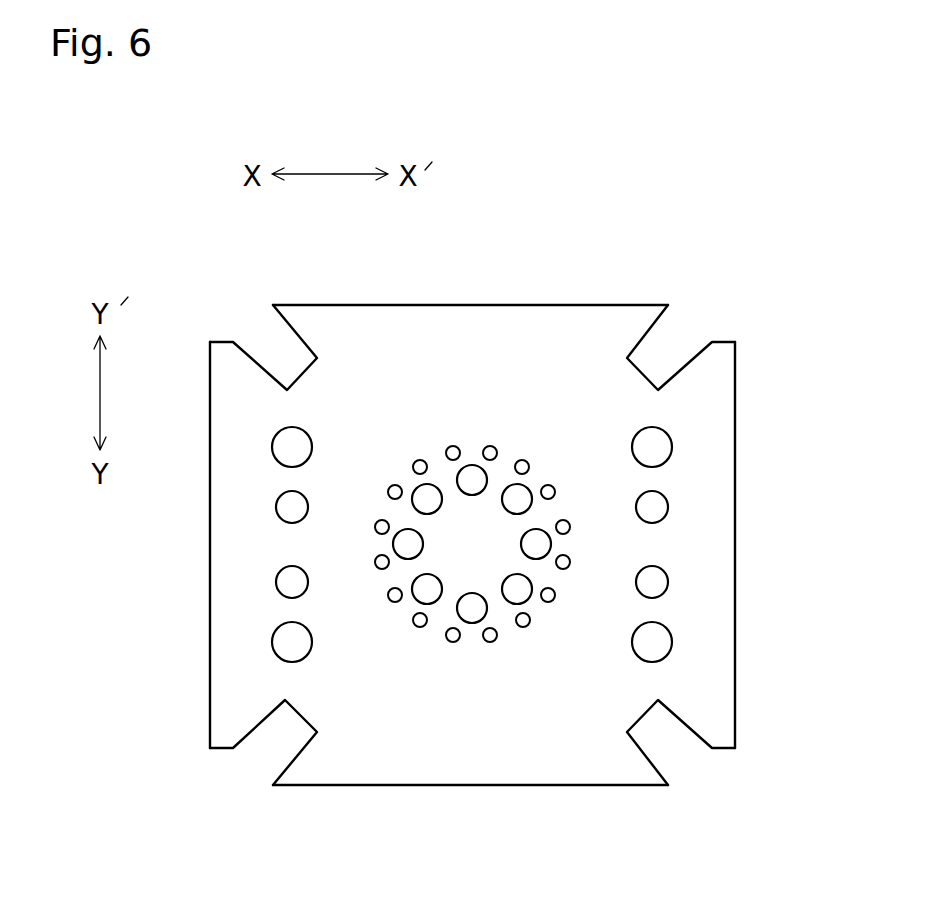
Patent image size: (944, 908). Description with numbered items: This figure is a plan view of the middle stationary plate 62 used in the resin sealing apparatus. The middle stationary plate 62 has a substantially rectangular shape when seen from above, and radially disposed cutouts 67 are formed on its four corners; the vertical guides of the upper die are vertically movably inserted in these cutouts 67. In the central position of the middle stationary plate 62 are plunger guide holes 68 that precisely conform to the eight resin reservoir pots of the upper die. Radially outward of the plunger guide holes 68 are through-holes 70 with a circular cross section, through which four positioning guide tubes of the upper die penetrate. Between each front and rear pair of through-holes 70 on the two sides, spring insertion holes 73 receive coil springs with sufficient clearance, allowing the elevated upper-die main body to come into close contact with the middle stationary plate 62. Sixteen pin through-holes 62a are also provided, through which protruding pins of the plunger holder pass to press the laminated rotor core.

The middle stationary plate 62 is at (617, 300).
The pin through-holes 62a is at (522, 460).
The cutouts 67 is at (287, 335).
The plunger guide holes 68 is at (537, 556).
The through-holes 70 is at (275, 435).
The spring insertion holes 73 is at (275, 590).